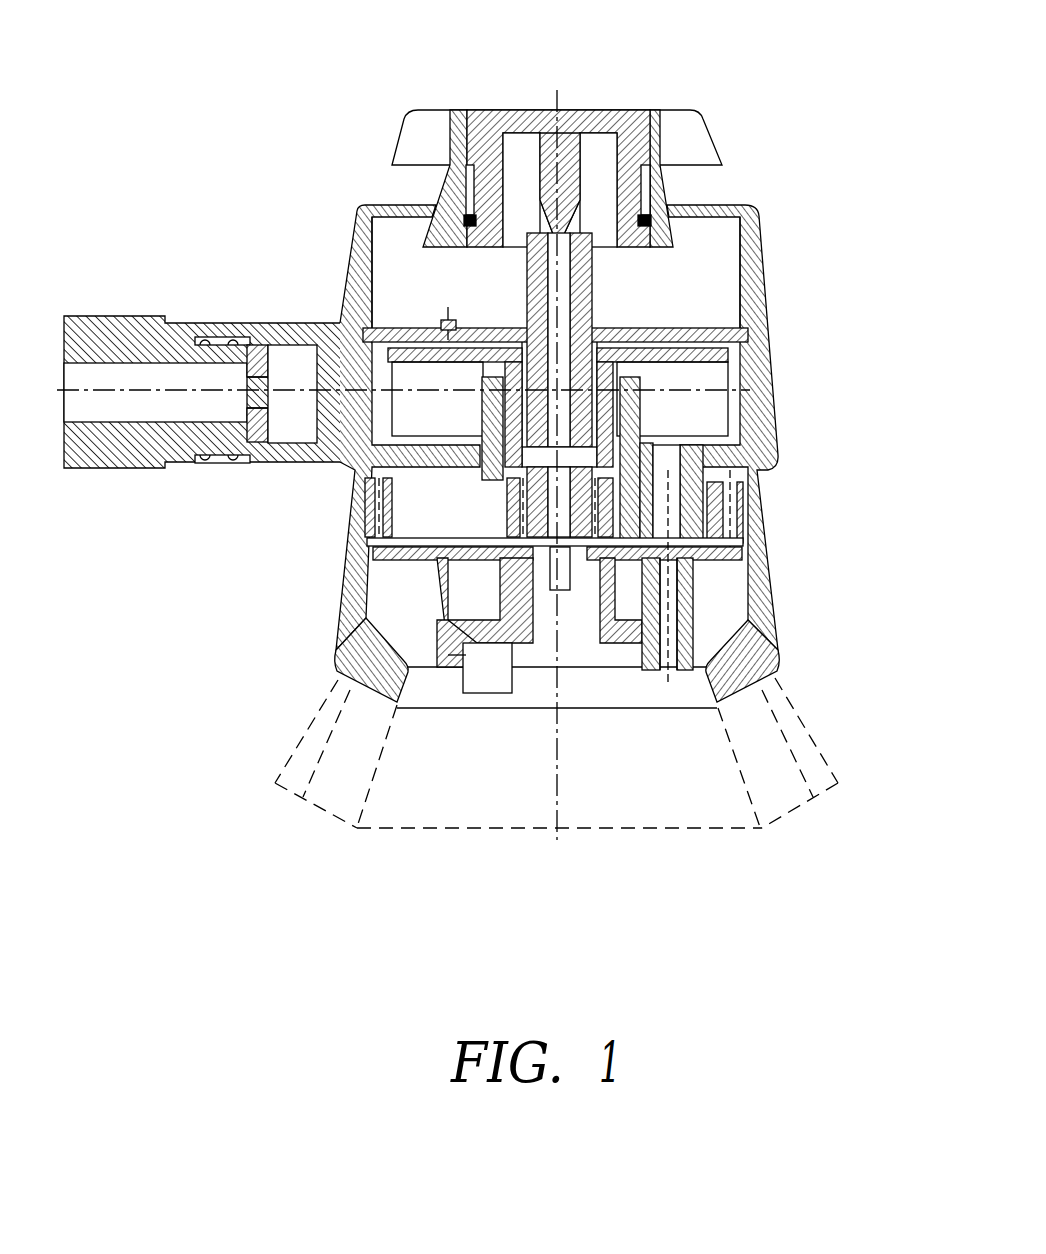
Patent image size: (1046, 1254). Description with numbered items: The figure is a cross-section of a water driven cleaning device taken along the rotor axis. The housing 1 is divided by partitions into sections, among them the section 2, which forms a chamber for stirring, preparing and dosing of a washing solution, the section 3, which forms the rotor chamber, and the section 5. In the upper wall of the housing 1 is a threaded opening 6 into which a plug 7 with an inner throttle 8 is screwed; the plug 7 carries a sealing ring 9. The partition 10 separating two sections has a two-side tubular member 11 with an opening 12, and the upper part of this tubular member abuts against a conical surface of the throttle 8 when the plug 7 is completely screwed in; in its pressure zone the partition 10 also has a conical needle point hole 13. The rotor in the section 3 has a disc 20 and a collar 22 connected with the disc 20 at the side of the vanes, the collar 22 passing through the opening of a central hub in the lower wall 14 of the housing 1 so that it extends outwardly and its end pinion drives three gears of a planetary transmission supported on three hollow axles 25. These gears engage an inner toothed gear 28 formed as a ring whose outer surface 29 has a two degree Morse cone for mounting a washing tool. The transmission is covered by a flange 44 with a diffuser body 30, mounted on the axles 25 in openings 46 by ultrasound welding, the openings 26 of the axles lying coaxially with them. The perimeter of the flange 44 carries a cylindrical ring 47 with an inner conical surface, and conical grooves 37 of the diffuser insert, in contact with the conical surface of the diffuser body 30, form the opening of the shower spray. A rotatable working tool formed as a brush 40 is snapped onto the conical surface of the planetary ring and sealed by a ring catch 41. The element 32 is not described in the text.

The housing 1 is at (745, 296).
The section 2 is at (713, 228).
The section 3 is at (673, 440).
The section 5 is at (395, 668).
The threaded opening 6 is at (425, 200).
The plug 7 is at (533, 167).
The throttle 8 is at (527, 162).
The sealing ring 9 is at (612, 200).
The partition 10 is at (772, 272).
The two-side tubular member 11 is at (428, 305).
The opening 12 is at (573, 310).
The conical needle point hole 13 is at (497, 293).
The lower wall 14 is at (367, 427).
The disc 20 is at (745, 340).
The collar 22 is at (703, 548).
The hollow axles 25 is at (748, 475).
The openings 26 is at (730, 355).
The inner toothed gear 28 is at (745, 541).
The outer surface 29 is at (777, 502).
The diffuser body 30 is at (695, 620).
The lower insert 32 is at (467, 668).
The conical grooves 37 is at (447, 672).
The brush 40 is at (333, 664).
The ring catch 41 is at (763, 487).
The flange 44 is at (440, 565).
The openings 46 is at (655, 585).
The cylindrical ring 47 is at (488, 588).